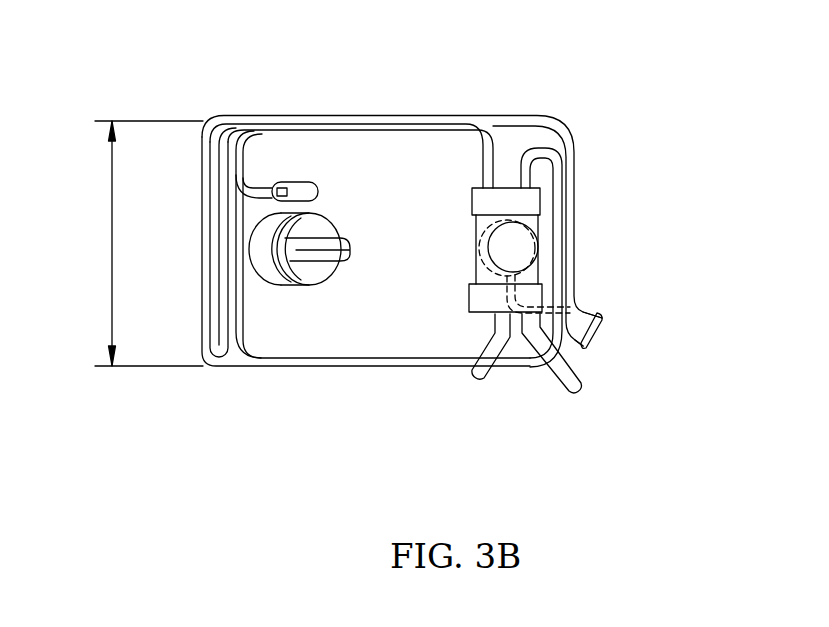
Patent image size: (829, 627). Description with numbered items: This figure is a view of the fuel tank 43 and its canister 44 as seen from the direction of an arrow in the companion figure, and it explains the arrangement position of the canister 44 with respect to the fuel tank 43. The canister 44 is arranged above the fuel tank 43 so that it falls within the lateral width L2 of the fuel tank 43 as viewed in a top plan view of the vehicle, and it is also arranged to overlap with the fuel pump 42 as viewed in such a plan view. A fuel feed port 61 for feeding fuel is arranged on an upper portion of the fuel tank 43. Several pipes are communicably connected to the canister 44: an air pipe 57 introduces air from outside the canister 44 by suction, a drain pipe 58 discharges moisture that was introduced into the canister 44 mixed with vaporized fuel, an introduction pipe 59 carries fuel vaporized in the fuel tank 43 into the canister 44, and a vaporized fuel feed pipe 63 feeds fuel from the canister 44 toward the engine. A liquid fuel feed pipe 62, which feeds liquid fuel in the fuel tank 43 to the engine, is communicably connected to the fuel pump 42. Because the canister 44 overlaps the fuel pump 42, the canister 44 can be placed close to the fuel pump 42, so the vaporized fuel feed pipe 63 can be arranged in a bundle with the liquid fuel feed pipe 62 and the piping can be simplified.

The fuel pump 42 is at (524, 271).
The fuel tank 43 is at (384, 114).
The canister 44 is at (507, 187).
The air pipe 57 is at (489, 392).
The drain pipe 58 is at (556, 396).
The introduction pipe 59 is at (203, 253).
The fuel feed port 61 is at (299, 212).
The liquid fuel feed pipe 62 is at (602, 315).
The vaporized fuel feed pipe 63 is at (574, 178).
The lateral width L2 is at (137, 243).